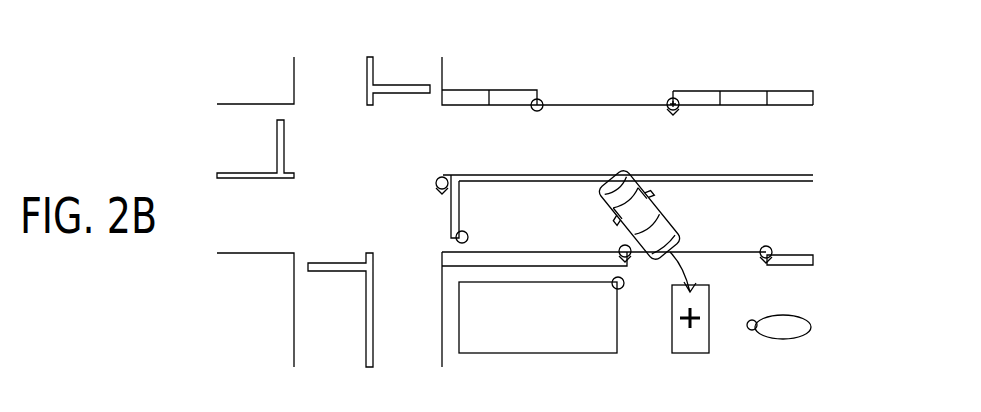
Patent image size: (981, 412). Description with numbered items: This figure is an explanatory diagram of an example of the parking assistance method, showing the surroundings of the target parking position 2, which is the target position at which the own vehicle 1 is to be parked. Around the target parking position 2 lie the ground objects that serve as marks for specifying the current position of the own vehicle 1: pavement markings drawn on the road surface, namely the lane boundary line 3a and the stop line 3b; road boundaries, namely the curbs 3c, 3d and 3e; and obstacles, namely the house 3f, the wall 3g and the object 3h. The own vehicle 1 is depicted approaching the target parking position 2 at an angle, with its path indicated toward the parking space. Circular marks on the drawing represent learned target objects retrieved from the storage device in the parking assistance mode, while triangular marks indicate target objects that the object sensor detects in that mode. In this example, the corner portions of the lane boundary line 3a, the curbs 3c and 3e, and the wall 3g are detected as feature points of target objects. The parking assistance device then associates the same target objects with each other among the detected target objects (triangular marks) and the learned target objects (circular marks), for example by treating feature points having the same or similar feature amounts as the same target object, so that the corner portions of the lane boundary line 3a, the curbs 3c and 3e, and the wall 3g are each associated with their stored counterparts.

The own vehicle 1 is at (623, 173).
The target parking position 2 is at (690, 328).
The lane boundary line 3a is at (555, 175).
The stop line 3b is at (457, 210).
The curb 3c is at (698, 91).
The curb 3d is at (513, 90).
The curb 3e is at (785, 255).
The house 3f is at (578, 353).
The wall 3g is at (555, 252).
The object 3h is at (785, 340).